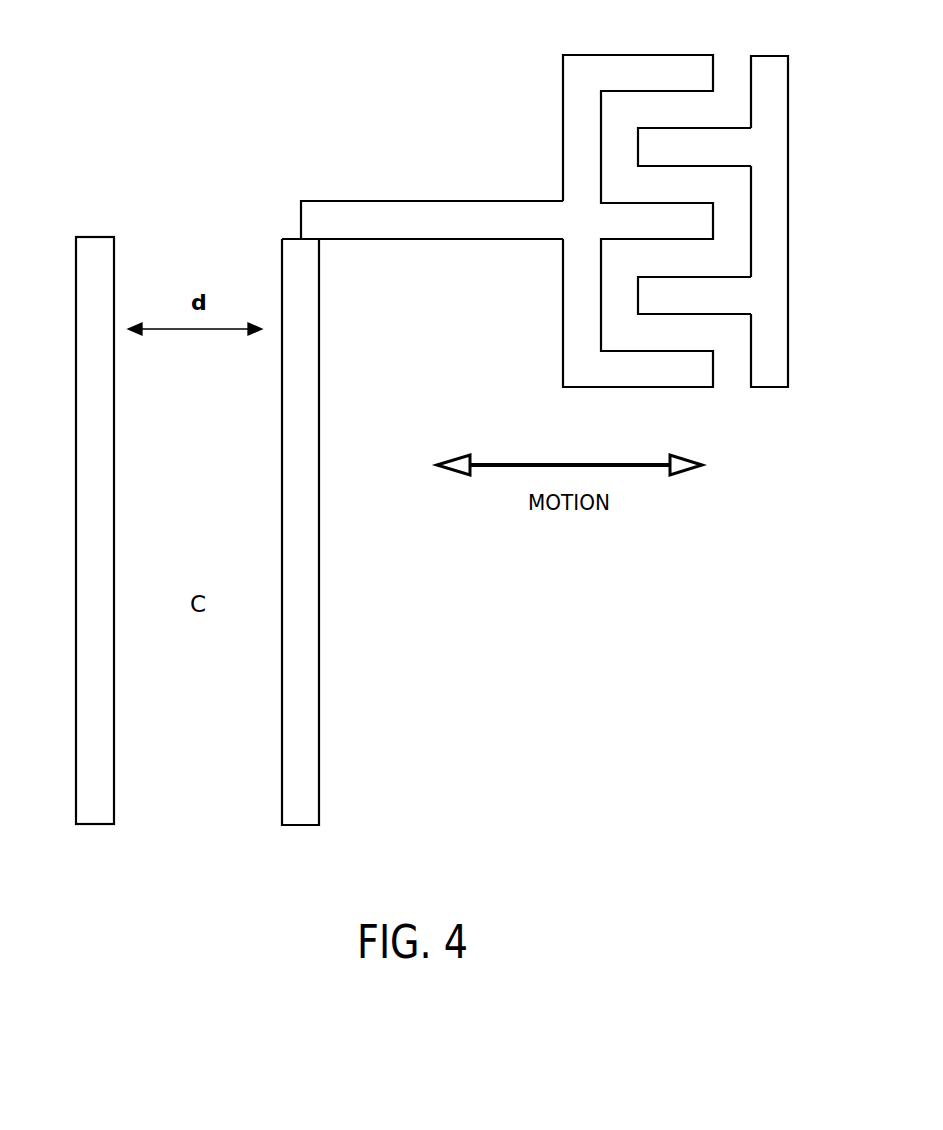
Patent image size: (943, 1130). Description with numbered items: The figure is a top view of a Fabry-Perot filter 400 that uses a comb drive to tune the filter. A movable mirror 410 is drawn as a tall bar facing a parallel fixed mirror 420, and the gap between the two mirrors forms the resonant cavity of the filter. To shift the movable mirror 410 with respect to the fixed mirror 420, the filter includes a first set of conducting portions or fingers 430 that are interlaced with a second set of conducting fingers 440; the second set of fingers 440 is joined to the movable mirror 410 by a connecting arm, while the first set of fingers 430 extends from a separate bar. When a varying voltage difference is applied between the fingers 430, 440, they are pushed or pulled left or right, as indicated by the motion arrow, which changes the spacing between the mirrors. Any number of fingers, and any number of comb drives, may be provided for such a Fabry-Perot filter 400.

The Fabry-Perot filter 400 is at (164, 44).
The movable mirror 410 is at (280, 498).
The fixed mirror 420 is at (75, 497).
The first set of conducting fingers 430 is at (768, 388).
The second set of conducting fingers 440 is at (563, 80).